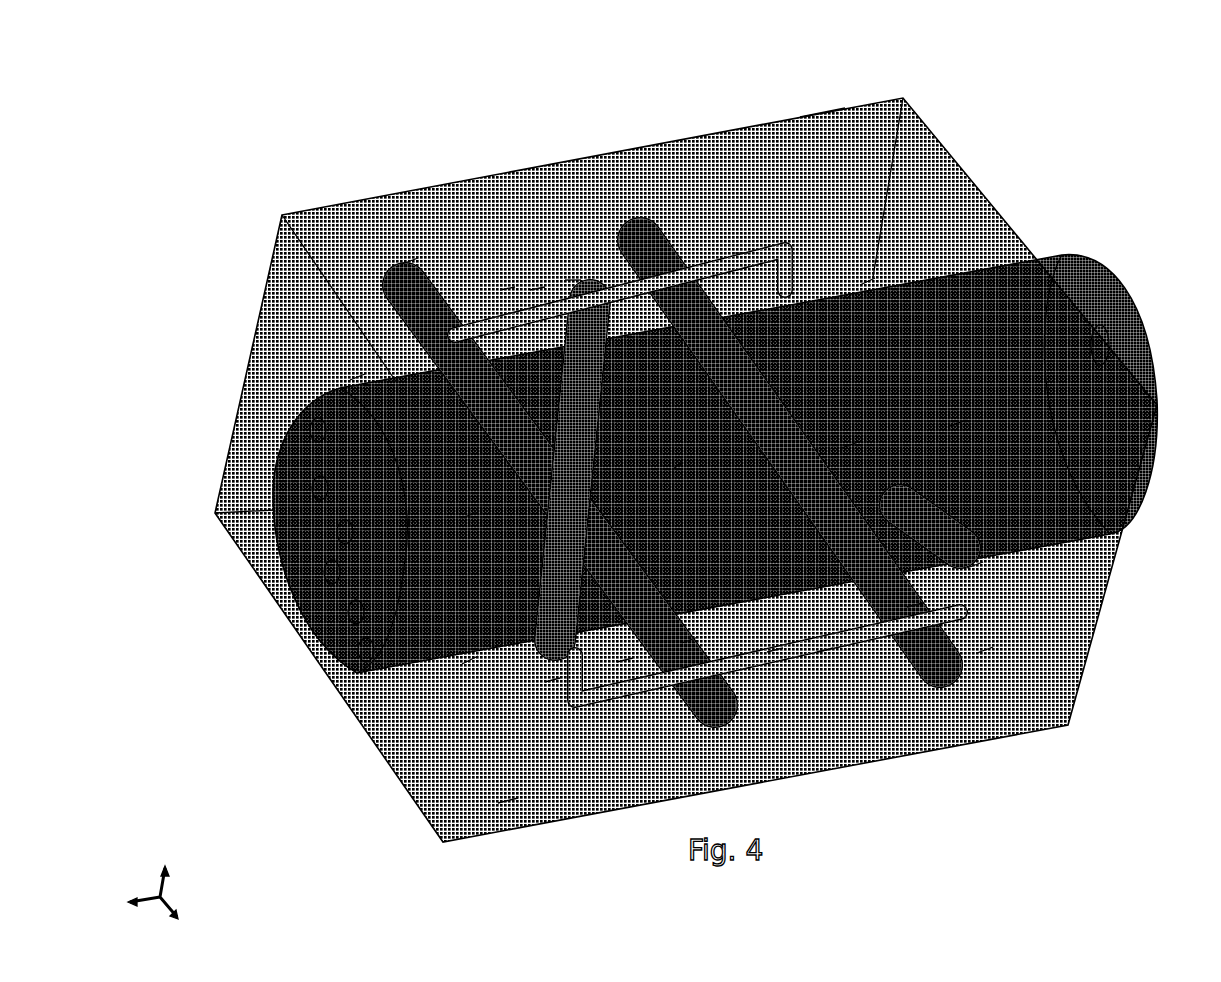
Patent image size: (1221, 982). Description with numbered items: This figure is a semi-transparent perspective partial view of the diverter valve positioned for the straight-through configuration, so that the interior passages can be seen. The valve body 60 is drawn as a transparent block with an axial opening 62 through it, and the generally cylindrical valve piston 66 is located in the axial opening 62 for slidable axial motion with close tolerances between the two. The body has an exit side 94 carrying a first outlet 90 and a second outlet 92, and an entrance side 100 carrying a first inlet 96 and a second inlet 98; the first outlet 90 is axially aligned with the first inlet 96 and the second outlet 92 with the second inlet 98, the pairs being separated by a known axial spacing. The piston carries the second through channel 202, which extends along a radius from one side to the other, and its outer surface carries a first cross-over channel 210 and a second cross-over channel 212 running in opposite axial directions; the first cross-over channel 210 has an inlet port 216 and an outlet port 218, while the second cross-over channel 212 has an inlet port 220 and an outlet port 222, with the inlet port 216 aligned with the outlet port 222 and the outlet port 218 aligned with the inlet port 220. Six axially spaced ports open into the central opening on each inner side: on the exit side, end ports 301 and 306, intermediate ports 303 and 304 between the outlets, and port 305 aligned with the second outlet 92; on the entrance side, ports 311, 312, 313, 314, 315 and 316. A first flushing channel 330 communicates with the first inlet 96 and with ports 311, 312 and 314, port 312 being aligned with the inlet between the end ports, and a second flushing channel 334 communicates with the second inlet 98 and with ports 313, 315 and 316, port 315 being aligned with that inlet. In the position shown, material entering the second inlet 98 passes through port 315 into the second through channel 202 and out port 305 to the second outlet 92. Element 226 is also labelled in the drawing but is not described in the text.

The valve body 60 is at (407, 812).
The axial opening 62 is at (850, 295).
The valve piston 66 is at (1037, 256).
The first outlet 90 is at (410, 260).
The second outlet 92 is at (637, 207).
The exit side 94 is at (822, 108).
The first inlet 96 is at (690, 640).
The second inlet 98 is at (985, 650).
The entrance side 100 is at (508, 800).
The second through channel 202 is at (850, 445).
The first cross-over channel 210 is at (810, 267).
The second cross-over channel 212 is at (692, 461).
The inlet port 216 is at (625, 660).
The outlet port 218 is at (867, 280).
The inlet port 220 is at (958, 423).
The outlet port 222 is at (537, 287).
The frame member 226 is at (470, 515).
The port 301 is at (357, 377).
The port 303 is at (573, 280).
The port 304 is at (590, 280).
The port 305 is at (740, 253).
The port 306 is at (800, 297).
The port 311 is at (470, 660).
The port 312 is at (507, 287).
The port 313 is at (775, 650).
The port 314 is at (825, 650).
The port 315 is at (915, 605).
The port 316 is at (1000, 548).
The first flushing channel 330 is at (483, 290).
The second flushing channel 334 is at (975, 565).